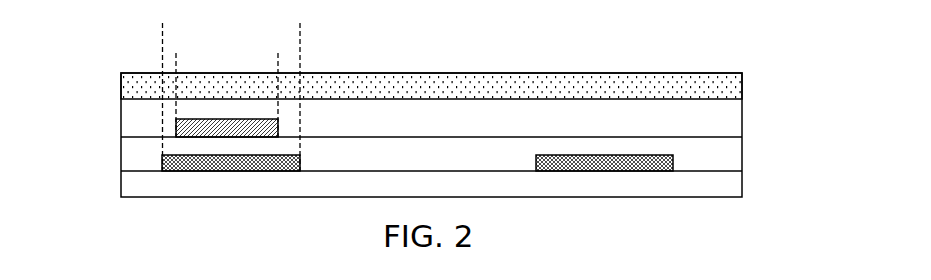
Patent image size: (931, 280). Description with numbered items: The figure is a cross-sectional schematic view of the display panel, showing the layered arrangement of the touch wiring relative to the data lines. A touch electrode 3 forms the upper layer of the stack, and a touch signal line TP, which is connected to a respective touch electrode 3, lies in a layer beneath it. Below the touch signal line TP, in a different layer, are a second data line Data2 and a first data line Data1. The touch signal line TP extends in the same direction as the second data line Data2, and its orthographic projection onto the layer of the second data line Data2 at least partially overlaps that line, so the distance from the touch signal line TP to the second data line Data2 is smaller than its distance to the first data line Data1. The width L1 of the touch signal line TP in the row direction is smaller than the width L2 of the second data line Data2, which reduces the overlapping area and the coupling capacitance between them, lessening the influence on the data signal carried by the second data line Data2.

The touch electrode 3 is at (121, 89).
The touch signal line TP is at (176, 133).
The second data line Data2 is at (162, 163).
The first data line Data1 is at (673, 168).
The width of the touch signal line L1 is at (278, 66).
The width of the second data line L2 is at (300, 40).